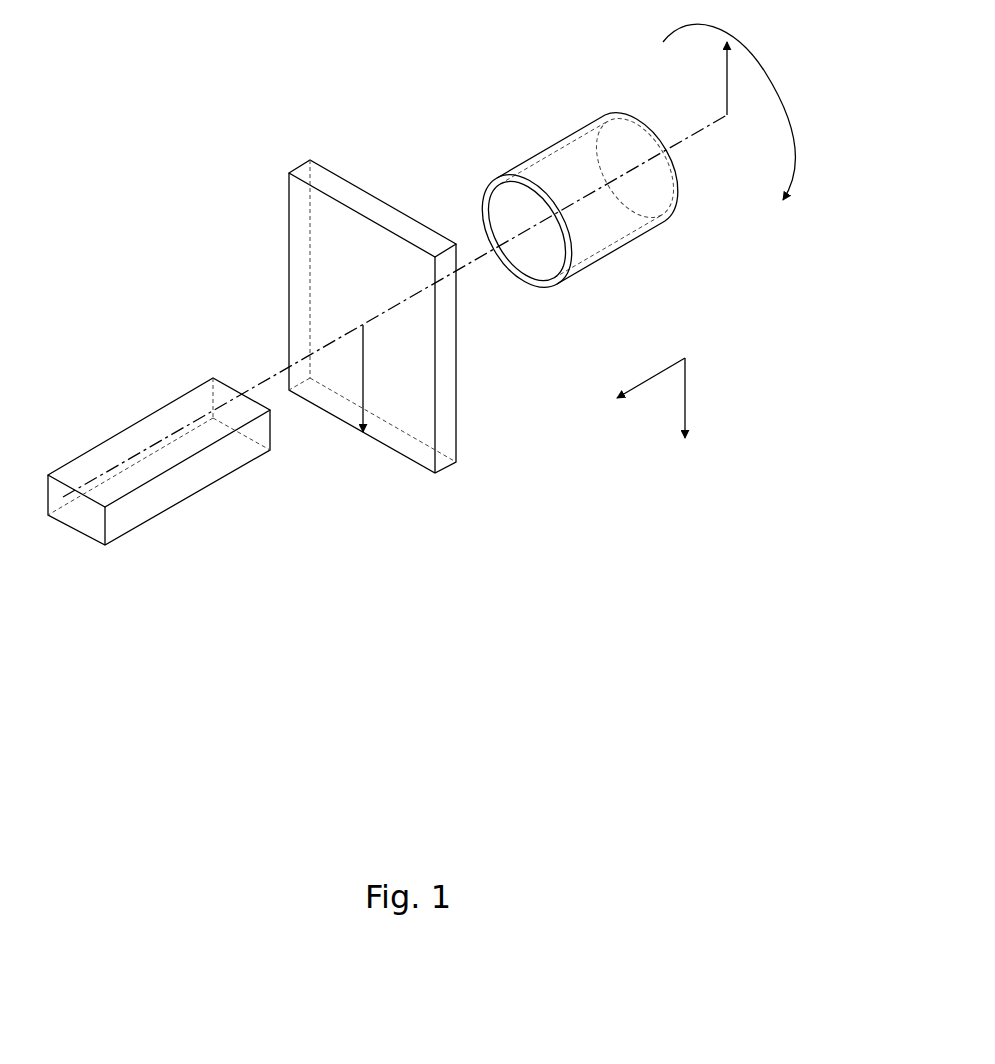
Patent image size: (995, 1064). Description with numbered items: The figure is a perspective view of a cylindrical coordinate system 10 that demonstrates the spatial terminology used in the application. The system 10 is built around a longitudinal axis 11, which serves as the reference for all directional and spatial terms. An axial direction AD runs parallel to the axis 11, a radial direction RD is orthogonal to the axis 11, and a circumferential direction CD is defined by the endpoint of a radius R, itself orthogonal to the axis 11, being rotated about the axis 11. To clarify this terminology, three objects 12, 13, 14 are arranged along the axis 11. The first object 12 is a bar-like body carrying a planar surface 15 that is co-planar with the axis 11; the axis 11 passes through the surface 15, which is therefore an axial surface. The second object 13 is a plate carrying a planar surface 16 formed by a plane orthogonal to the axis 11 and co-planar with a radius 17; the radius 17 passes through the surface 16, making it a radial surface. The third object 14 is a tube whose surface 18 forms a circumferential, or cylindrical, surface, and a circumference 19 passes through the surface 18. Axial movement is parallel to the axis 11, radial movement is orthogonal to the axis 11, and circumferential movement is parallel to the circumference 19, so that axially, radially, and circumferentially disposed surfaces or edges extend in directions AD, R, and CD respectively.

The cylindrical coordinate system 10 is at (249, 204).
The longitudinal axis 11 is at (681, 140).
The object 12 is at (159, 490).
The object 13 is at (375, 338).
The object 14 is at (545, 207).
The axial surface 15 is at (125, 447).
The radial surface 16 is at (303, 278).
The radius 17 is at (364, 372).
The circumferential surface 18 is at (550, 146).
The circumference 19 is at (487, 199).
The radius R is at (726, 72).
The circumferential direction CD is at (773, 78).
The axial direction AD is at (653, 377).
The radial direction RD is at (687, 395).